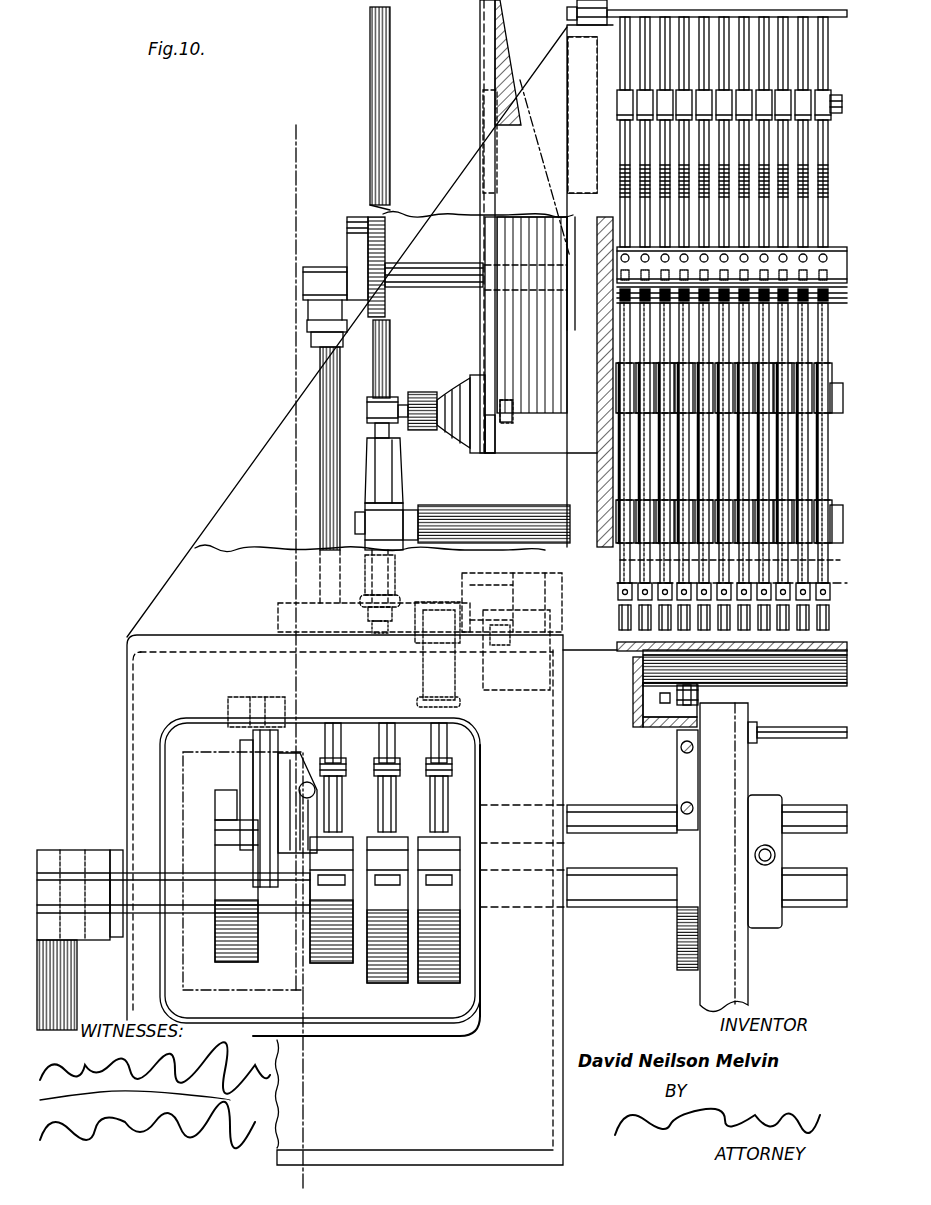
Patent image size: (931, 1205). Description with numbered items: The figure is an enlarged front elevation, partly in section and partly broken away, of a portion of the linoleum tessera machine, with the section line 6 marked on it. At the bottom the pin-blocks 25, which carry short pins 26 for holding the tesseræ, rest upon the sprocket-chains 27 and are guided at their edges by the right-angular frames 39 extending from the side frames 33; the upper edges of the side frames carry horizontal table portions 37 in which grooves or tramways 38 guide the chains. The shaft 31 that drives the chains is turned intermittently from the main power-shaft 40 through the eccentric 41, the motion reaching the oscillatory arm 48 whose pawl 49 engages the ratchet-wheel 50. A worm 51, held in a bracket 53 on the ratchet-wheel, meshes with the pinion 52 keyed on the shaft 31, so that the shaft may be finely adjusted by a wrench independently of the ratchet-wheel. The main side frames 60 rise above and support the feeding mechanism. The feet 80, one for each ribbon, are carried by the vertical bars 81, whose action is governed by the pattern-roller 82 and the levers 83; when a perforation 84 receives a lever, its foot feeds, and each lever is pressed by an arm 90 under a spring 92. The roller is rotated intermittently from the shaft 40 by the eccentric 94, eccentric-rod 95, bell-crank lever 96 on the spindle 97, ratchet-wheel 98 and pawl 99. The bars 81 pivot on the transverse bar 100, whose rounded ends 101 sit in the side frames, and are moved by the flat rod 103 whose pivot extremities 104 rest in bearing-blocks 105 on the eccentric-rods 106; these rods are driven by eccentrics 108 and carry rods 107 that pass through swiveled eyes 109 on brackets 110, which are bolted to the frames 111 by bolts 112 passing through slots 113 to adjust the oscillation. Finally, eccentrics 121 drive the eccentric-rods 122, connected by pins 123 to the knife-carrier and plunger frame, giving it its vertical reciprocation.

The section line 6- 6 is at (303, 645).
The pin-blocks 25 is at (790, 686).
The pins 26 is at (822, 685).
The sprocket-chains 27 is at (699, 698).
The shaft 31 is at (590, 814).
The side frames 33 is at (750, 978).
The table portions 37 is at (656, 728).
The grooves or tramways 38 is at (683, 708).
The right-angular frames 39 is at (632, 710).
The main power-shaft 40 is at (173, 940).
The eccentric 41 is at (236, 888).
The oscillatory arm 48 is at (245, 762).
The pawl 49 is at (265, 700).
The ratchet-wheel 50 is at (250, 775).
The worm 51 is at (332, 772).
The pinion 52 is at (270, 835).
The bracket 53 is at (305, 781).
The main side frames 60 is at (347, 593).
The feet 80 is at (628, 650).
The bars 81 is at (800, 440).
The pattern-roller 82 is at (732, 281).
The levers 83 is at (622, 60).
The perforations 84 is at (822, 258).
The arm 90 is at (818, 565).
The spring 92 is at (822, 332).
The eccentric 94 is at (331, 911).
The eccentric-rod 95 is at (320, 435).
The bell-crank lever 96 is at (348, 237).
The spindle 97 is at (434, 293).
The ratchet-wheel 98 is at (393, 262).
The pawl 99 is at (386, 225).
The bar 100 is at (578, 500).
The rounded ends 101 is at (535, 412).
The flat rod 103 is at (510, 502).
The pivot extremities 104 is at (412, 513).
The bearing-blocks 105 is at (400, 457).
The eccentric-rods 106 is at (380, 655).
The rods 107 is at (372, 128).
The eccentrics 108 is at (387, 863).
The swiveled eyes or bearings 109 is at (367, 407).
The brackets 110 is at (440, 395).
The frames 111 is at (483, 70).
The bolts 112 is at (487, 430).
The slots 113 is at (490, 95).
The eccentrics 121 is at (439, 920).
The eccentric-rods 122 is at (448, 737).
The pins 123 is at (495, 650).